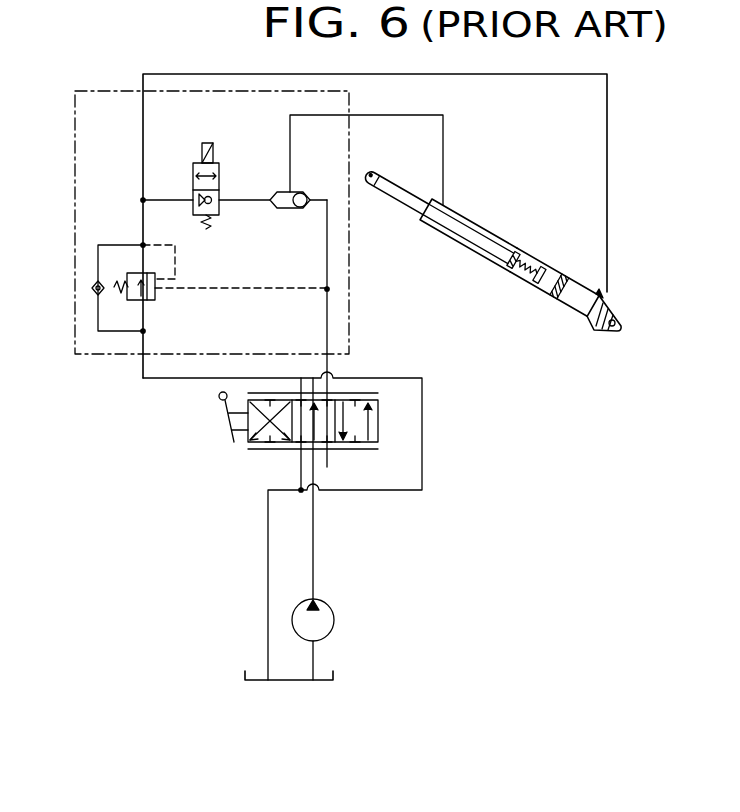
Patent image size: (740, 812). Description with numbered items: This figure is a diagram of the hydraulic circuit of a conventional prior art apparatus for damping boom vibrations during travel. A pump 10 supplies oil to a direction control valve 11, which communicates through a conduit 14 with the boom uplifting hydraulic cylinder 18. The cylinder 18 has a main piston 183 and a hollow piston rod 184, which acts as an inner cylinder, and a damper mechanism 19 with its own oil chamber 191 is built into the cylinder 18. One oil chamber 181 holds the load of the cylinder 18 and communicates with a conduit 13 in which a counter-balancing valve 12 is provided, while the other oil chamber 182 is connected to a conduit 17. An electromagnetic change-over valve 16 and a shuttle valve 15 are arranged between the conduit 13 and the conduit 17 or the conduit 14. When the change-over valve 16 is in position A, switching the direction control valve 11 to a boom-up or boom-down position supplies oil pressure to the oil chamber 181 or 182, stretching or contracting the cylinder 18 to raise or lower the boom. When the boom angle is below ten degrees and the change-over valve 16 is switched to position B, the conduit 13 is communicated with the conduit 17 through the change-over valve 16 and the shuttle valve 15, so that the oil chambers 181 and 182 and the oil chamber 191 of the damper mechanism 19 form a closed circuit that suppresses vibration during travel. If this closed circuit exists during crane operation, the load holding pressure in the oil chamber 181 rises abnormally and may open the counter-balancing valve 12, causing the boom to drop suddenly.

The hydraulic pump 10 is at (334, 618).
The direction control valve 11 is at (248, 444).
The counter-balancing valve 12 is at (153, 300).
The conduit 13 is at (608, 187).
The conduit 14 is at (327, 318).
The shuttle valve 15 is at (290, 209).
The electromagnetic change-over valve 16 is at (193, 163).
The conduit 17 is at (443, 133).
The boom uplifting hydraulic cylinder 18 is at (490, 263).
The oil chamber 181 is at (552, 282).
The oil chamber 182 is at (471, 235).
The main piston 183 is at (559, 286).
The piston rod 184 is at (396, 192).
The damper mechanism 19 is at (527, 267).
The oil chamber 191 is at (539, 274).